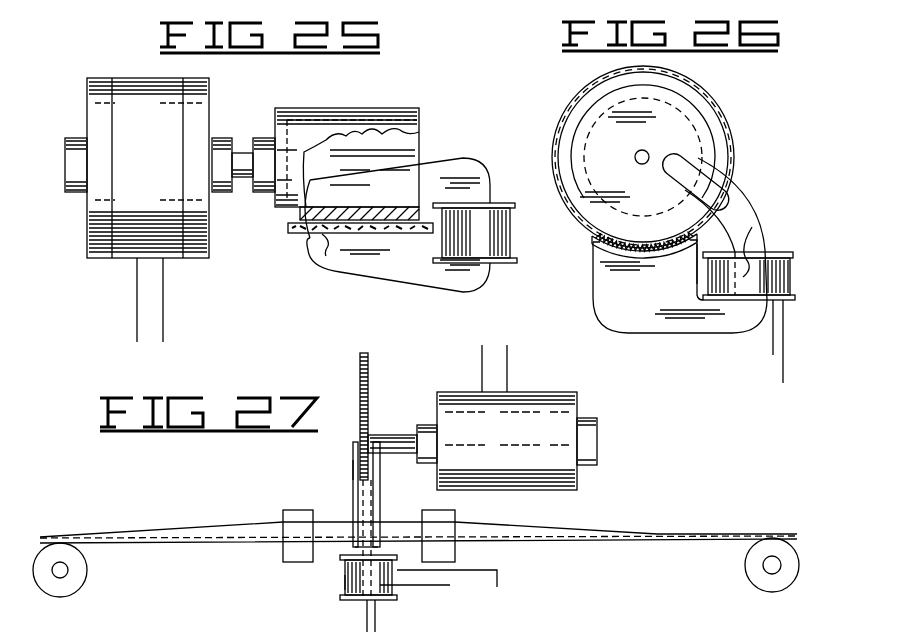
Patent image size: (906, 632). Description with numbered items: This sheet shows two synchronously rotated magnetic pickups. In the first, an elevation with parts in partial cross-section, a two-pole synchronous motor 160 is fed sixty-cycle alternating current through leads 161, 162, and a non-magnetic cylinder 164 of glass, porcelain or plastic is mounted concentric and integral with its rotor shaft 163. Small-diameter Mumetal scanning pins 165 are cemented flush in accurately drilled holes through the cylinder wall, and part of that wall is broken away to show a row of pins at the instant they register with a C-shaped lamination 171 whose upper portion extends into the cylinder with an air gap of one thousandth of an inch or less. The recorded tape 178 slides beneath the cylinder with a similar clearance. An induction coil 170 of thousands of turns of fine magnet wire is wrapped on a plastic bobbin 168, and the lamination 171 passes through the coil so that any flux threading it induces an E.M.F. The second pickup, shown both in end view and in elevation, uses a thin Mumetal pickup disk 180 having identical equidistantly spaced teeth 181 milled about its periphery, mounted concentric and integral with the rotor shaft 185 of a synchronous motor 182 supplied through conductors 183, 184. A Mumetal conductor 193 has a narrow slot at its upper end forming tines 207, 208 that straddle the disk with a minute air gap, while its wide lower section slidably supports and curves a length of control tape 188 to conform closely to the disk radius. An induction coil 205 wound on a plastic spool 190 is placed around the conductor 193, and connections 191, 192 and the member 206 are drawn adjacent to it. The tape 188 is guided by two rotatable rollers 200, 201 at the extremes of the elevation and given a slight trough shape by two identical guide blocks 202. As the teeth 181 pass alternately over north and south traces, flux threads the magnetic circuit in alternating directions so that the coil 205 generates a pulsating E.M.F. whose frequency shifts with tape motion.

In FIG. 25, the synchronous motor 160 is at (156, 90).
In FIG. 25, the lead 161 is at (135, 306).
In FIG. 25, the lead 162 is at (166, 305).
In FIG. 25, the rotor shaft 163 is at (240, 158).
In FIG. 25, the cylinder 164 is at (347, 110).
In FIG. 25, the scanning pins 165 is at (299, 233).
In FIG. 25, the bobbin 168 is at (511, 263).
In FIG. 25, the induction coil 170 is at (525, 233).
In FIG. 25, the lamination 171 is at (475, 169).
In FIG. 25, the tape 178 is at (323, 246).
In FIG. 26, the pickup disk 180 is at (572, 120).
In FIG. 27, the pickup disk 180 is at (373, 379).
In FIG. 26, the teeth 181 is at (714, 258).
In FIG. 27, the motor 182 is at (527, 407).
In FIG. 27, the conductor 183 is at (509, 366).
In FIG. 27, the conductor 184 is at (481, 374).
In FIG. 26, the rotor shaft 185 is at (624, 164).
In FIG. 27, the rotor shaft 185 is at (412, 438).
In FIG. 26, the control tape 188 is at (593, 246).
In FIG. 27, the control tape 188 is at (243, 542).
In FIG. 26, the spool 190 is at (770, 252).
In FIG. 27, the spool 190 is at (408, 597).
In FIG. 26, the line 191 is at (772, 353).
In FIG. 27, the line 191 is at (499, 588).
In FIG. 26, the line 192 is at (782, 382).
In FIG. 27, the line 192 is at (450, 585).
In FIG. 26, the conductor 193 is at (672, 333).
In FIG. 27, the conductor 193 is at (376, 613).
In FIG. 27, the rotatable roller 200 is at (746, 572).
In FIG. 27, the rotatable roller 201 is at (82, 577).
In FIG. 27, the guide blocks 202 is at (298, 562).
In FIG. 26, the induction coil 205 is at (753, 229).
In FIG. 27, the induction coil 205 is at (345, 584).
In FIG. 26, the arm 206 is at (743, 195).
In FIG. 27, the arm 206 is at (381, 493).
In FIG. 27, the tine 207 is at (381, 470).
In FIG. 26, the tine 208 is at (710, 180).
In FIG. 27, the tine 208 is at (353, 470).